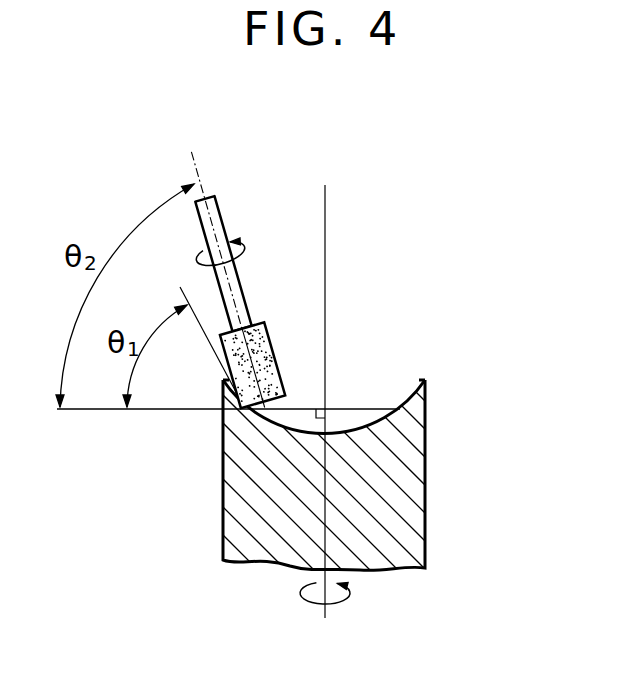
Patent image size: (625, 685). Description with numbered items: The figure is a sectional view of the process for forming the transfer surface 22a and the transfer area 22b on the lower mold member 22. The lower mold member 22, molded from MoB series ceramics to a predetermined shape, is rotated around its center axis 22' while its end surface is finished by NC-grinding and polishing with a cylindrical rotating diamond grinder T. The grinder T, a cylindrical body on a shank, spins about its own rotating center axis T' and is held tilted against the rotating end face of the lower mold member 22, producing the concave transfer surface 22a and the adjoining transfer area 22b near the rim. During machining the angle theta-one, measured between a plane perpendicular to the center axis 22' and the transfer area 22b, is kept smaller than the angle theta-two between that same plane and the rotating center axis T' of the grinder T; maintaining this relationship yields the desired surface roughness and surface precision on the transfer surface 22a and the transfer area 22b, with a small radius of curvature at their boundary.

The lower mold member 22 is at (317, 475).
The transfer surface 22a is at (367, 423).
The transfer area 22b is at (405, 382).
The center axis 22' is at (355, 391).
The cylindrical rotating diamond grinder T is at (260, 351).
The rotating center axis of the grinder T' is at (221, 234).